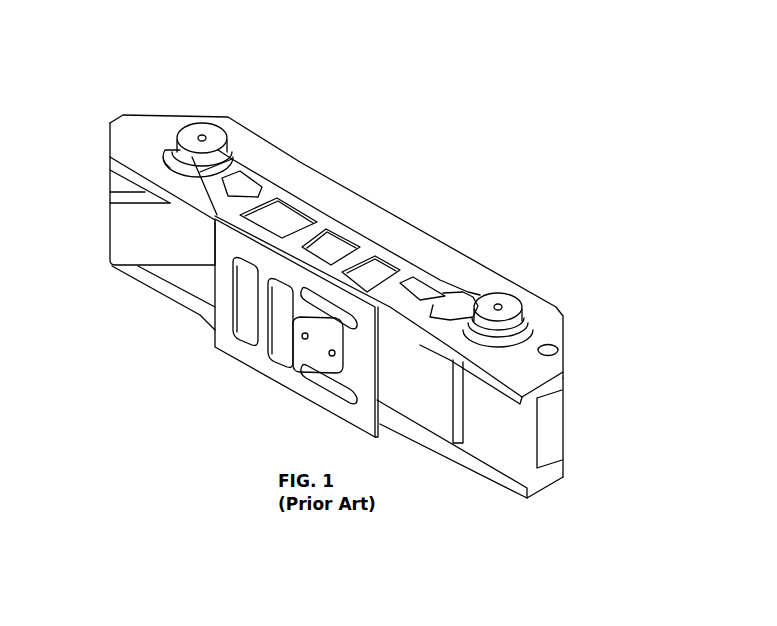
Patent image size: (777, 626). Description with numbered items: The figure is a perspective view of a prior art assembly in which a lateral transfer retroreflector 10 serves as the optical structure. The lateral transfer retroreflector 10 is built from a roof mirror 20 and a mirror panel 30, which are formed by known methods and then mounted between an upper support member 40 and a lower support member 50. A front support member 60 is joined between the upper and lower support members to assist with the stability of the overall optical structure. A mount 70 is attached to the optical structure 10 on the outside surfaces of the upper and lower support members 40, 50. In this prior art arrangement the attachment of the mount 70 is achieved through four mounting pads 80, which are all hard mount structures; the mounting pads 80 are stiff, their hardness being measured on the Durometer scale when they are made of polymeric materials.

The lateral transfer retroreflector 10 is at (458, 248).
The roof mirror 20 is at (135, 233).
The mirror panel 30 is at (547, 442).
The upper support member 40 is at (313, 183).
The lower support member 50 is at (492, 450).
The front support member 60 is at (432, 403).
The mount 70 is at (247, 350).
The mounting pads 80 is at (223, 147).